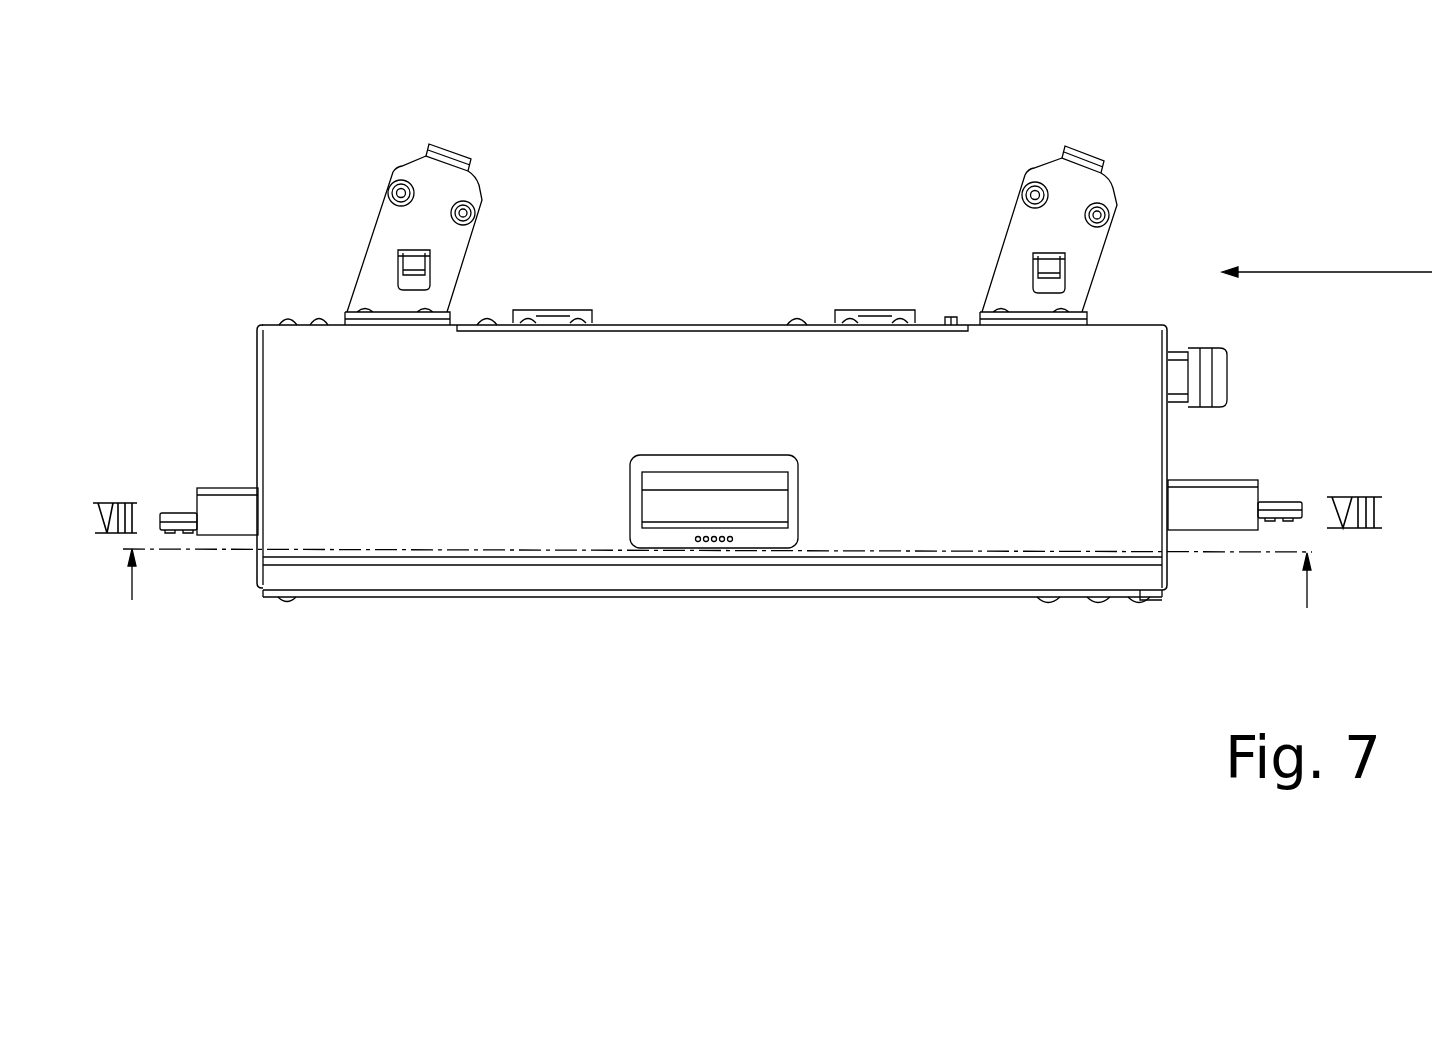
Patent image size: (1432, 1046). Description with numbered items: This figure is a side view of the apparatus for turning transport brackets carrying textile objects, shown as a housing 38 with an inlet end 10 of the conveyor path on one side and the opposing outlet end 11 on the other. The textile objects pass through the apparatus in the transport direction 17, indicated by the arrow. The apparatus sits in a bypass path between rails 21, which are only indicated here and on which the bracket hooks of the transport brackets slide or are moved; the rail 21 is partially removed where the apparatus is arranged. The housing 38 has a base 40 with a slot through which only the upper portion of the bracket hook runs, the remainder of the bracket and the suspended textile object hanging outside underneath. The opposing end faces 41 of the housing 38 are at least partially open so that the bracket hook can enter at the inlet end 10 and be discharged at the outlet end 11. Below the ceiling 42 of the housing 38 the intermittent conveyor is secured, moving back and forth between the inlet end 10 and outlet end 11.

The inlet end 10 is at (1218, 495).
The outlet end 11 is at (230, 498).
The transport direction 17 is at (1350, 270).
The rail 21 is at (177, 521).
The housing 38 is at (423, 537).
The base 40 is at (780, 595).
The end face 41 is at (255, 358).
The ceiling 42 is at (303, 323).